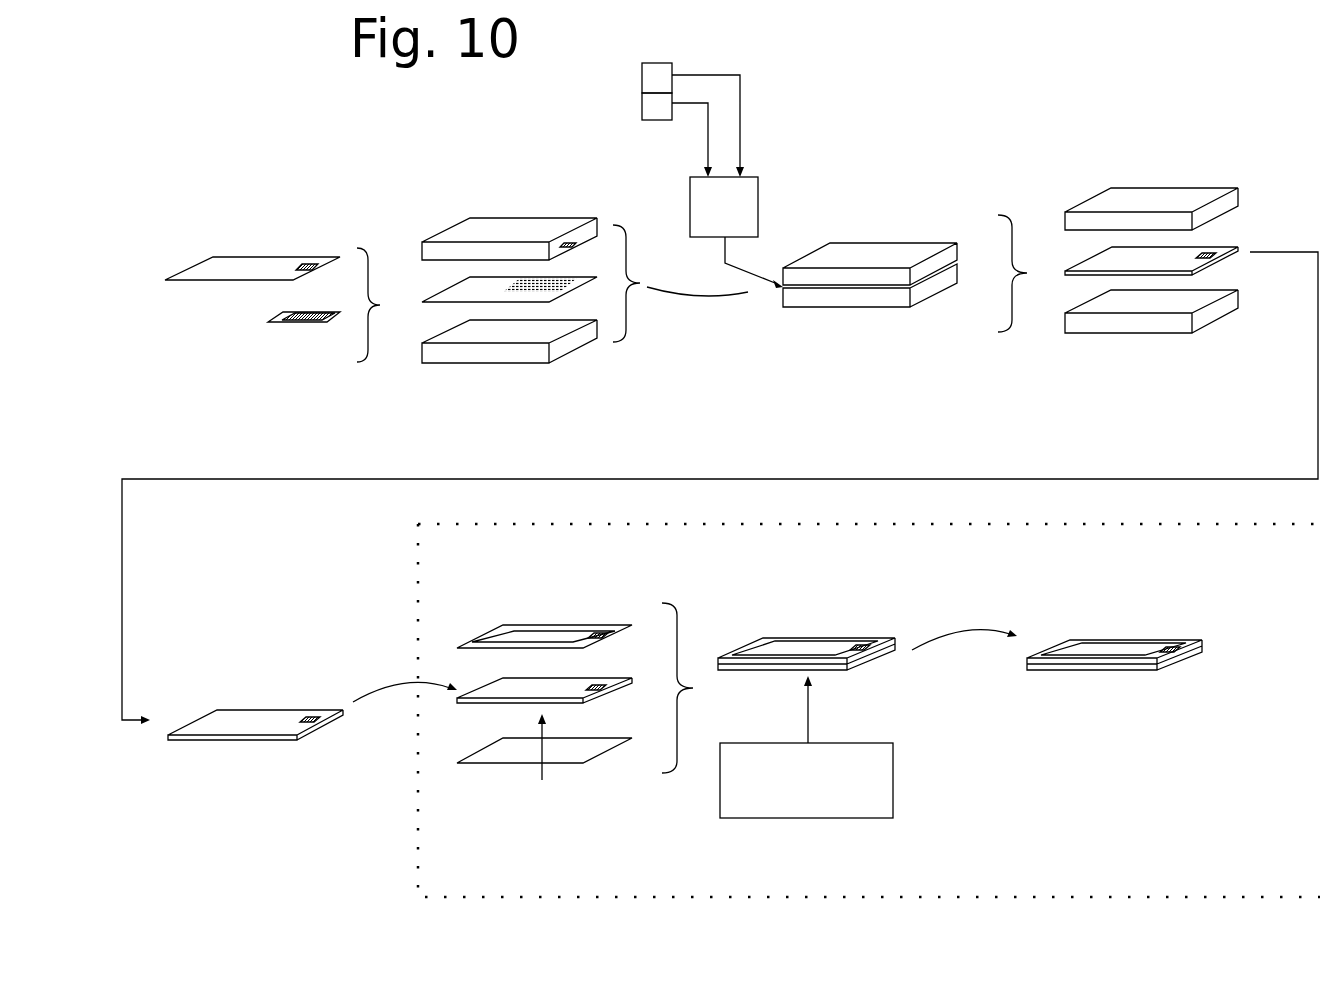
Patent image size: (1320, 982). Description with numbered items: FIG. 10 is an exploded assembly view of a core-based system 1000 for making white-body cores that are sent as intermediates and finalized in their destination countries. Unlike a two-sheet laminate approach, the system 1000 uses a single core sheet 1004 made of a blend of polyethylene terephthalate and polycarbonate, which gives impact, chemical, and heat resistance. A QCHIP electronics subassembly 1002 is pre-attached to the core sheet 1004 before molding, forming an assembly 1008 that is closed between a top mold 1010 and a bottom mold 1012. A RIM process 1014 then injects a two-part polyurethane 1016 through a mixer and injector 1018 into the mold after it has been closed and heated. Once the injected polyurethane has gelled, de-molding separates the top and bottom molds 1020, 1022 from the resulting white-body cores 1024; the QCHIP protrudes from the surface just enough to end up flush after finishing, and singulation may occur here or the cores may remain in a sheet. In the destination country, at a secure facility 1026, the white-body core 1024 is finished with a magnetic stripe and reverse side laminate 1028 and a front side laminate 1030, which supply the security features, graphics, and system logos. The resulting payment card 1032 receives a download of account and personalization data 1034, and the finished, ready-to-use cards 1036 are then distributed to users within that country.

The core-based system 1000 is at (292, 80).
The QCHIP electronics subassembly 1002 is at (300, 312).
The core sheet 1004 is at (243, 256).
The assembly 1008 is at (442, 292).
The top mold 1010 is at (453, 225).
The bottom mold 1012 is at (482, 362).
The RIM process 1014 is at (855, 306).
The two-part polyurethane 1016 is at (660, 120).
The mixer and injector 1018 is at (690, 223).
The top mold (de-molding) 1020 is at (1097, 202).
The bottom mold (de-molding) 1022 is at (1107, 335).
The white-body core 1024 is at (1213, 242).
The secure facility 1026 is at (1183, 812).
The magnetic stripe and reverse side laminate 1028 is at (562, 622).
The front side laminate 1030 is at (628, 757).
The payment card 1032 is at (830, 637).
The account and personalization data 1034 is at (930, 766).
The finished ready-to-use card 1036 is at (1080, 671).